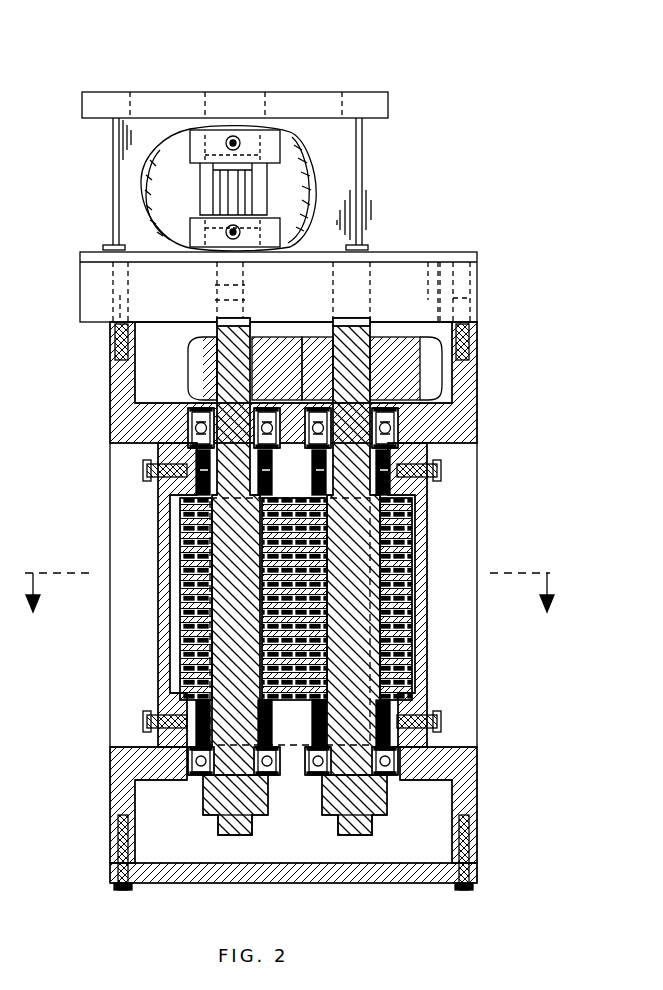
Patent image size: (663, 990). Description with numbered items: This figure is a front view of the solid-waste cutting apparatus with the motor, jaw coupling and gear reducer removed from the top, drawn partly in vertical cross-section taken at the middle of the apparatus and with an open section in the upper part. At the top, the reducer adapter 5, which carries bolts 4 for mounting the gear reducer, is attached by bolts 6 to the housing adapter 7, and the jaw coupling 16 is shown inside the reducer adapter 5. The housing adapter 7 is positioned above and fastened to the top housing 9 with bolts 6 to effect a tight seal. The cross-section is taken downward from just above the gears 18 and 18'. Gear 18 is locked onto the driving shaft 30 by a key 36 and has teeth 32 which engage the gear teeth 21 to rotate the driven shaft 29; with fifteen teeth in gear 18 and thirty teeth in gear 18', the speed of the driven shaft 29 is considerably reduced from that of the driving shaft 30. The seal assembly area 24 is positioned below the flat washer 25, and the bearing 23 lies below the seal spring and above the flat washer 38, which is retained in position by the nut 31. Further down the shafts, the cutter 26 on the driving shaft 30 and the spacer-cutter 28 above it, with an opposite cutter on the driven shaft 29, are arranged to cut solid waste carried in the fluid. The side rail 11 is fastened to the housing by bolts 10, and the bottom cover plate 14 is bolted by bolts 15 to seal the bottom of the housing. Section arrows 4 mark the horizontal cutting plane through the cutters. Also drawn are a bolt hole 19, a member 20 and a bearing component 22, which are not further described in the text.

The bolts 4 is at (289, 604).
The reducer adapter 5 is at (348, 150).
The bolts 6 is at (355, 330).
The housing adapter 7 is at (452, 273).
The top housing 9 is at (478, 384).
The bolts 10 is at (148, 476).
The side rail 11 is at (163, 672).
The bottom cover plate 14 is at (427, 883).
The bolts 15 is at (120, 888).
The jaw coupling 16 is at (215, 146).
The gear 18 is at (221, 346).
The gear 18' is at (316, 346).
The bolt 19 is at (452, 313).
The gear 20 is at (438, 286).
The gear teeth 21 is at (473, 383).
The bearing 22 is at (398, 420).
The bearing 23 is at (388, 428).
The seal assembly area 24 is at (170, 492).
The flat washer 25 is at (400, 512).
The cutter 26 is at (405, 556).
The spacer-cutter 28 is at (405, 575).
The driven shaft 29 is at (345, 837).
The driving shaft 30 is at (240, 840).
The nut 31 is at (207, 817).
The teeth 32 is at (200, 373).
The key 36 is at (217, 322).
The flat washer 38 is at (396, 780).